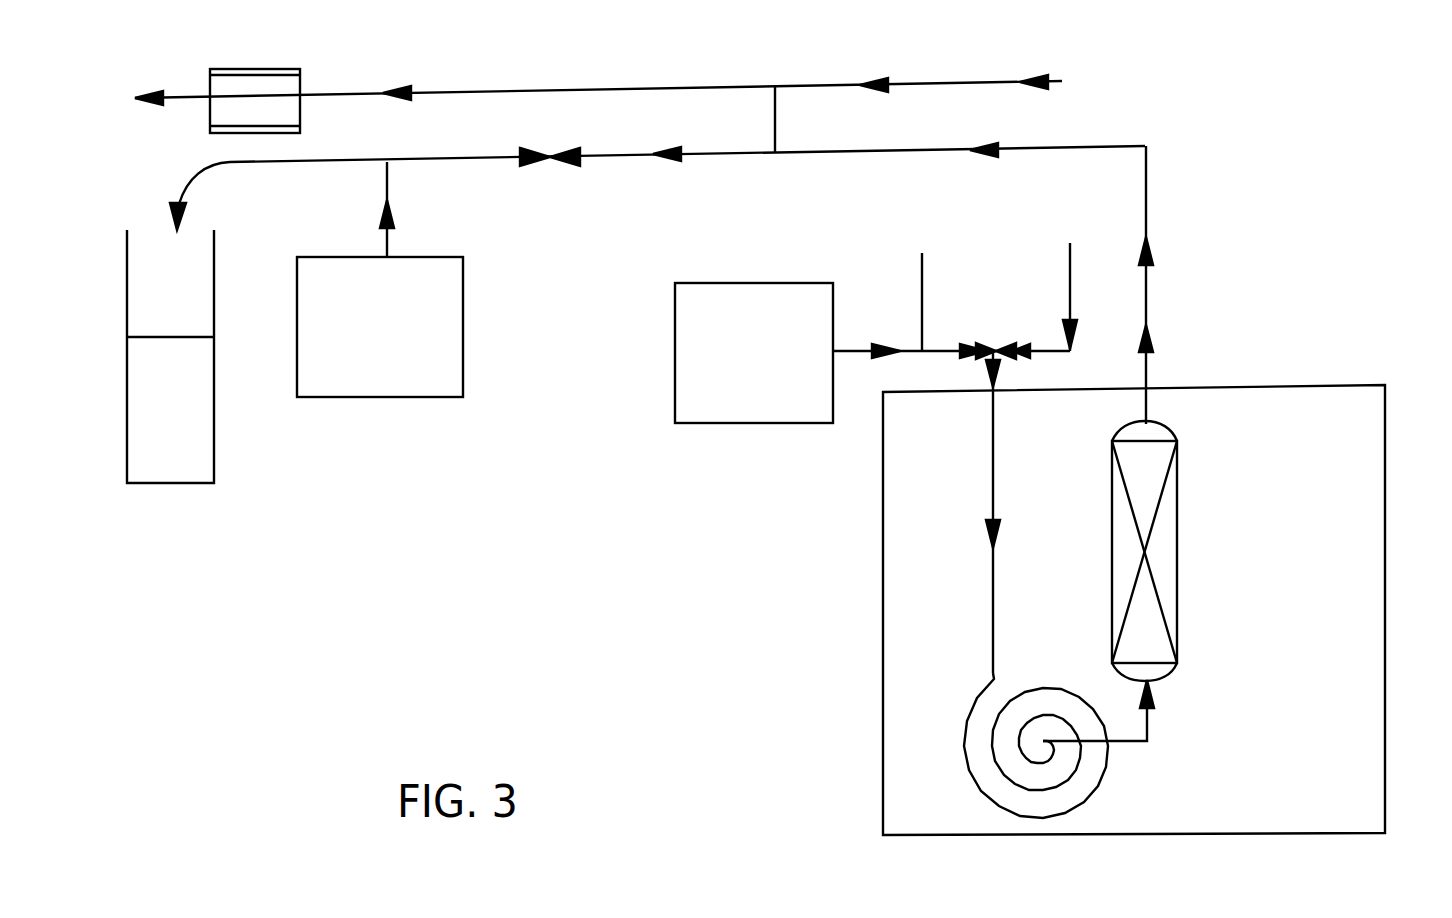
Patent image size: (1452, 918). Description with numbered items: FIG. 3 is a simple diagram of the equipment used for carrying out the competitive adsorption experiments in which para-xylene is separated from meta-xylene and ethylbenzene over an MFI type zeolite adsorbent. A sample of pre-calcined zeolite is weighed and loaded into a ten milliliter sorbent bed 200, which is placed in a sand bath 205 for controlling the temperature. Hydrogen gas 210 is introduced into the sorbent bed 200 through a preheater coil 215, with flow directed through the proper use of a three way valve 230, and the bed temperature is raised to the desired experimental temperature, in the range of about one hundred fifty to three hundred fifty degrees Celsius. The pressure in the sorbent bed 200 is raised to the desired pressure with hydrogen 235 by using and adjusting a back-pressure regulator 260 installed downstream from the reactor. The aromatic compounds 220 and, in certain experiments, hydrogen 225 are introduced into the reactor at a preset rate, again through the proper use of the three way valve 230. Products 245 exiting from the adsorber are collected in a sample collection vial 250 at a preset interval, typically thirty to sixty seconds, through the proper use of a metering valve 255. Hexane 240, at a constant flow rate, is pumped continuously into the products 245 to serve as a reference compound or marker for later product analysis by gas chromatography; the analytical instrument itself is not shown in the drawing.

The sorbent bed 200 is at (1178, 541).
The sand bath 205 is at (1386, 583).
The hydrogen gas 210 is at (1073, 300).
The preheater coil 215 is at (1098, 776).
The aromatic compounds 220 is at (858, 350).
The hydrogen 225 is at (924, 294).
The three way valve 230 is at (995, 356).
The hydrogen 235 is at (977, 82).
The hexane 240 is at (390, 170).
The products 245 is at (1150, 290).
The sample collection vial 250 is at (215, 405).
The metering valve 255 is at (550, 160).
The back-pressure regulator 260 is at (302, 82).